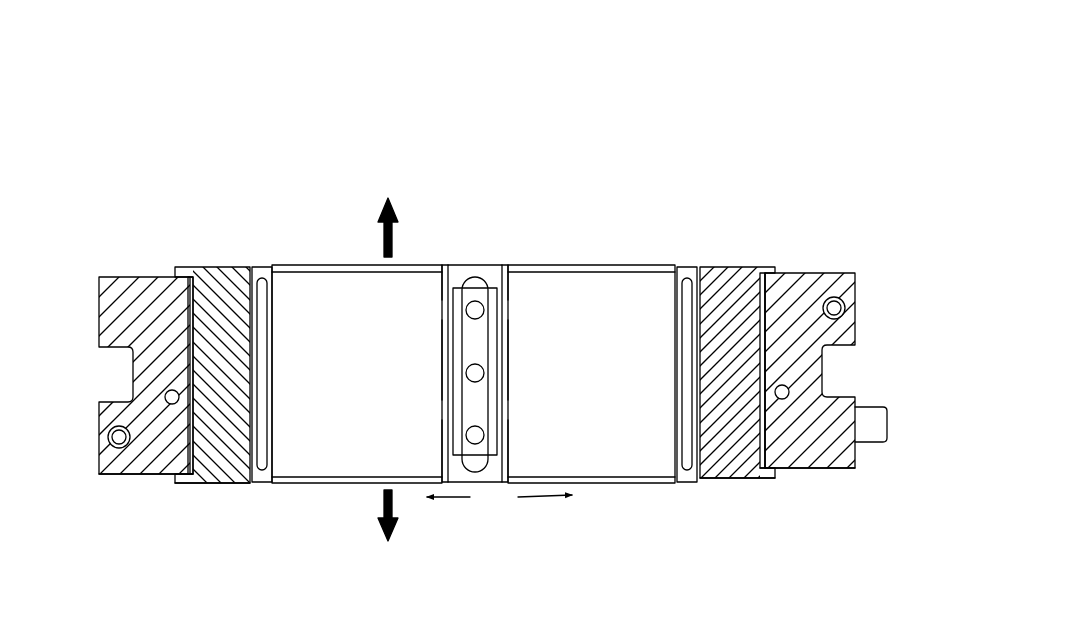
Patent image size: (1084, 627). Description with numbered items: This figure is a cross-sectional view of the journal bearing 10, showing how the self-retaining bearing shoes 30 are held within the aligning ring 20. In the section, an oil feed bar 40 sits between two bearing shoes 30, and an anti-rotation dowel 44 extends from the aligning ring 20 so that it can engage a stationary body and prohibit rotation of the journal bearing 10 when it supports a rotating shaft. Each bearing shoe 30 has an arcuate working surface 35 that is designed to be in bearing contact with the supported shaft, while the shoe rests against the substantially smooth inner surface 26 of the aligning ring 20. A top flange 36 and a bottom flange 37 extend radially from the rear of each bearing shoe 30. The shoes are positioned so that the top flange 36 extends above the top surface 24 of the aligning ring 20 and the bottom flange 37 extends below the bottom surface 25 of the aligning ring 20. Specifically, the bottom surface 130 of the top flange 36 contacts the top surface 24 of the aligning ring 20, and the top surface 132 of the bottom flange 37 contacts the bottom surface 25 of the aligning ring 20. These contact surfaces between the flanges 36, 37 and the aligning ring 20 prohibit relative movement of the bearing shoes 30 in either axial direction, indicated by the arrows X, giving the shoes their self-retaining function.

The journal bearing 10 is at (703, 100).
The aligning ring 20 is at (468, 360).
The top surface of the aligning ring 24 is at (148, 274).
The bottom surface of the aligning ring 25 is at (138, 480).
The inner surface of the aligning ring 26 is at (196, 322).
The bearing shoe 30 is at (208, 265).
The arcuate working surface 35 is at (690, 382).
The top flange 36 is at (186, 284).
The bottom flange 37 is at (184, 478).
The oil feed bar 40 is at (268, 265).
The anti-rotation dowel 44 is at (893, 410).
The bottom surface of the top flange 130 is at (178, 279).
The top surface of the bottom flange 132 is at (163, 475).